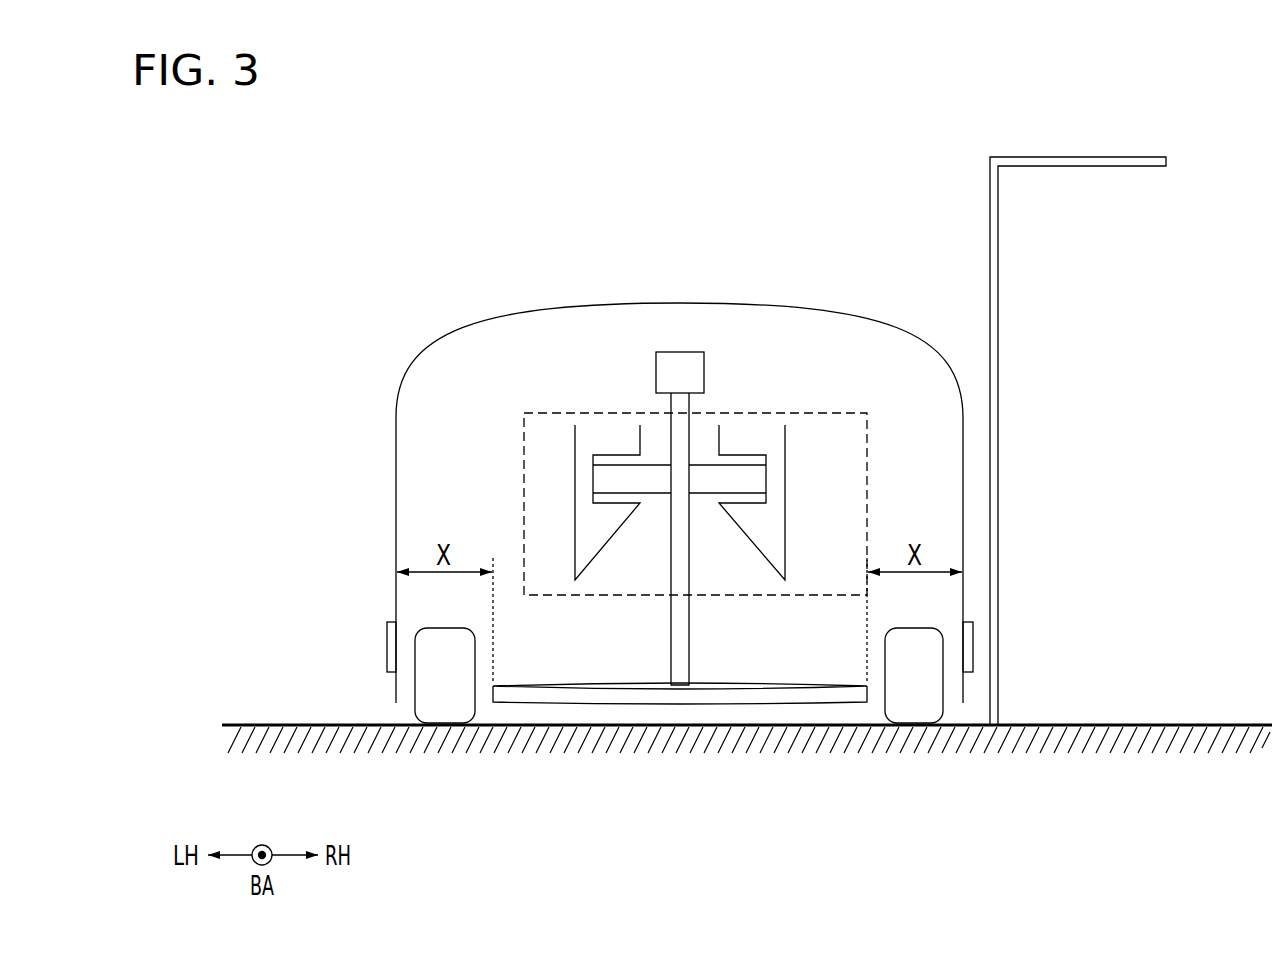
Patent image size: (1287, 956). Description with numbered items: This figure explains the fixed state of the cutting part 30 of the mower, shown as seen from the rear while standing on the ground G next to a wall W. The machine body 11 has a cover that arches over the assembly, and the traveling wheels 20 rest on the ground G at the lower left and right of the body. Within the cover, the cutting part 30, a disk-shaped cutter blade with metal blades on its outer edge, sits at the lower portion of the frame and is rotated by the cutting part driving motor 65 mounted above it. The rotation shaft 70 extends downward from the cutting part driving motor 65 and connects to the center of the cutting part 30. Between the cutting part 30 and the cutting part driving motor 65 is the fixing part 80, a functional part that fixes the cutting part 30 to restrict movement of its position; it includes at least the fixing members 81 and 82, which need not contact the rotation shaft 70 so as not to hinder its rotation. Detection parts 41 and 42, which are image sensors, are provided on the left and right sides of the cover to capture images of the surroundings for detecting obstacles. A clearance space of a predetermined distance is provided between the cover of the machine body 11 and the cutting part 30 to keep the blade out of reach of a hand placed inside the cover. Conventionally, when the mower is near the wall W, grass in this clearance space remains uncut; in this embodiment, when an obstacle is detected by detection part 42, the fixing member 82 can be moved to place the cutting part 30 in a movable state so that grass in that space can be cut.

The machine body 11 is at (877, 336).
The traveling wheel 20 is at (444, 712).
The cutting part 30 is at (805, 683).
The detection part 41 is at (387, 648).
The detection part 42 is at (973, 646).
The cutting part driving motor 65 is at (680, 352).
The rotation shaft 70 is at (671, 633).
The fixing part 80 is at (833, 412).
The fixing member 81 is at (633, 476).
The fixing member 82 is at (730, 476).
The wall W is at (1076, 157).
The ground G is at (297, 725).